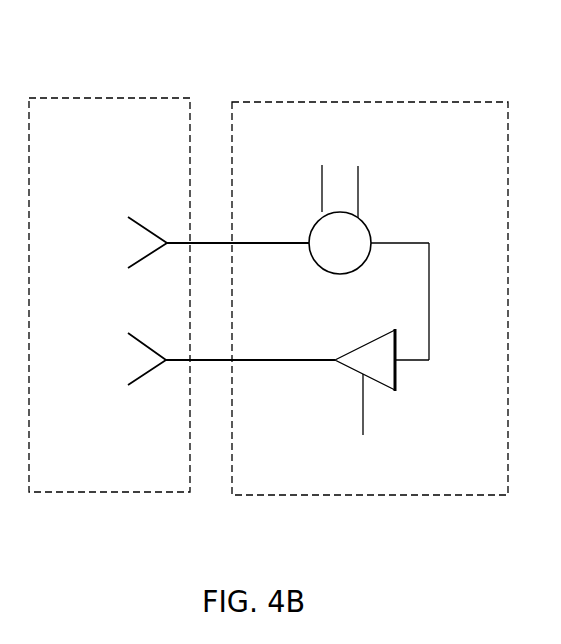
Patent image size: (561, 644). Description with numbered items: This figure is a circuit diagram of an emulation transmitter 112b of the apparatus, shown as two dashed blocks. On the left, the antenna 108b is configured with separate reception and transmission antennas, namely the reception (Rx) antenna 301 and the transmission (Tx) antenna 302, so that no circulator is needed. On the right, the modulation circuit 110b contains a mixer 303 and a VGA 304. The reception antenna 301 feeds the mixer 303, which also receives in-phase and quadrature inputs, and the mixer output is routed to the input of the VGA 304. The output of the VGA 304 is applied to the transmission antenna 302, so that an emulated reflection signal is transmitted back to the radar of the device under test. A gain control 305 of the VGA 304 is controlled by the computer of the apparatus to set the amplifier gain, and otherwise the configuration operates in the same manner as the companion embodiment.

The antenna 108b is at (118, 98).
The modulation circuit 110b is at (403, 100).
The emulation transmitter 112b is at (284, 57).
The reception antenna 301 is at (140, 222).
The transmission antenna 302 is at (143, 375).
The mixer 303 is at (368, 220).
The VGA 304 is at (395, 385).
The gain control 305 is at (397, 461).